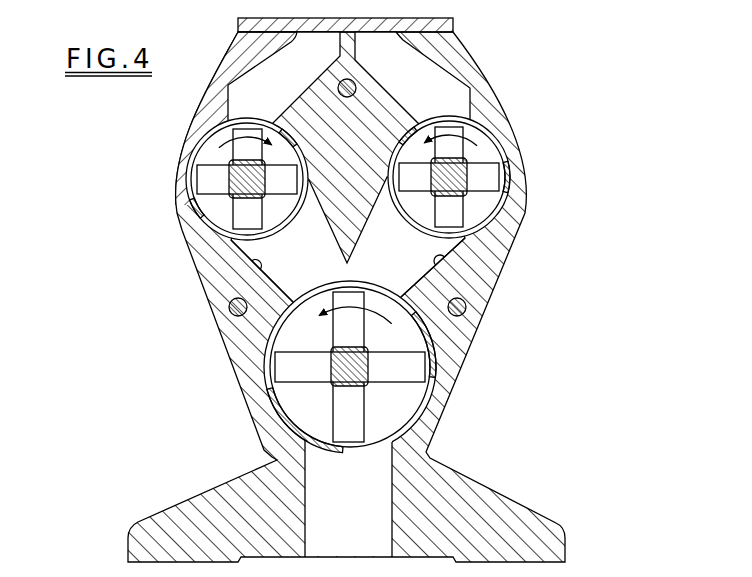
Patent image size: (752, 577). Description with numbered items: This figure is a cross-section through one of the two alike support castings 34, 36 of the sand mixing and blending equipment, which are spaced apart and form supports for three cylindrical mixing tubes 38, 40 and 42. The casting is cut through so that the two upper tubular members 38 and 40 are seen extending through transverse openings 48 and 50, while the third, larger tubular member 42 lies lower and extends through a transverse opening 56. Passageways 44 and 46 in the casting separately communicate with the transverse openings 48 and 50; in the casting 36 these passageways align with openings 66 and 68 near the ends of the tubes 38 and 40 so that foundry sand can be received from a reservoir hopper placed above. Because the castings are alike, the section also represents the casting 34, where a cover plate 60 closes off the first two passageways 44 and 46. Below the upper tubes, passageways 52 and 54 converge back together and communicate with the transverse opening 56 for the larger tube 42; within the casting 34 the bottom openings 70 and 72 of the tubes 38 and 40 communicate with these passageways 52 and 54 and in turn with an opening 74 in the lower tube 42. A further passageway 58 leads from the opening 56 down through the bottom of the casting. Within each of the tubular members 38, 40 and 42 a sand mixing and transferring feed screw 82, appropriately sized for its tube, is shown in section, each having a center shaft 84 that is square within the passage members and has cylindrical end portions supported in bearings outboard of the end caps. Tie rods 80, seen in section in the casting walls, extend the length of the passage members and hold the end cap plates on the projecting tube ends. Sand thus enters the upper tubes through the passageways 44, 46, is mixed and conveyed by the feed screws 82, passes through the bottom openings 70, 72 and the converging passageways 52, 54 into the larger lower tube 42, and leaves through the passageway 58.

The support casting 34 is at (219, 486).
The support casting 36 is at (196, 183).
The cylindrical mixing tube 38 is at (507, 162).
The cylindrical mixing tube 40 is at (192, 160).
The cylindrical mixing tube 42 is at (436, 376).
The passageway 44 is at (262, 67).
The passageway 46 is at (433, 66).
The transverse opening 48 is at (200, 205).
The transverse opening 50 is at (503, 190).
The passageway 52 is at (252, 258).
The passageway 54 is at (442, 259).
The transverse opening 56 is at (277, 402).
The passageway 58 is at (368, 512).
The cover plate 60 is at (447, 16).
The opening 66 is at (242, 122).
The opening 68 is at (478, 128).
The bottom opening 70 is at (265, 230).
The bottom opening 72 is at (418, 226).
The opening 74 is at (350, 408).
The tie rod 80 is at (357, 89).
The feed screw 82 is at (225, 208).
The center shaft 84 is at (355, 379).